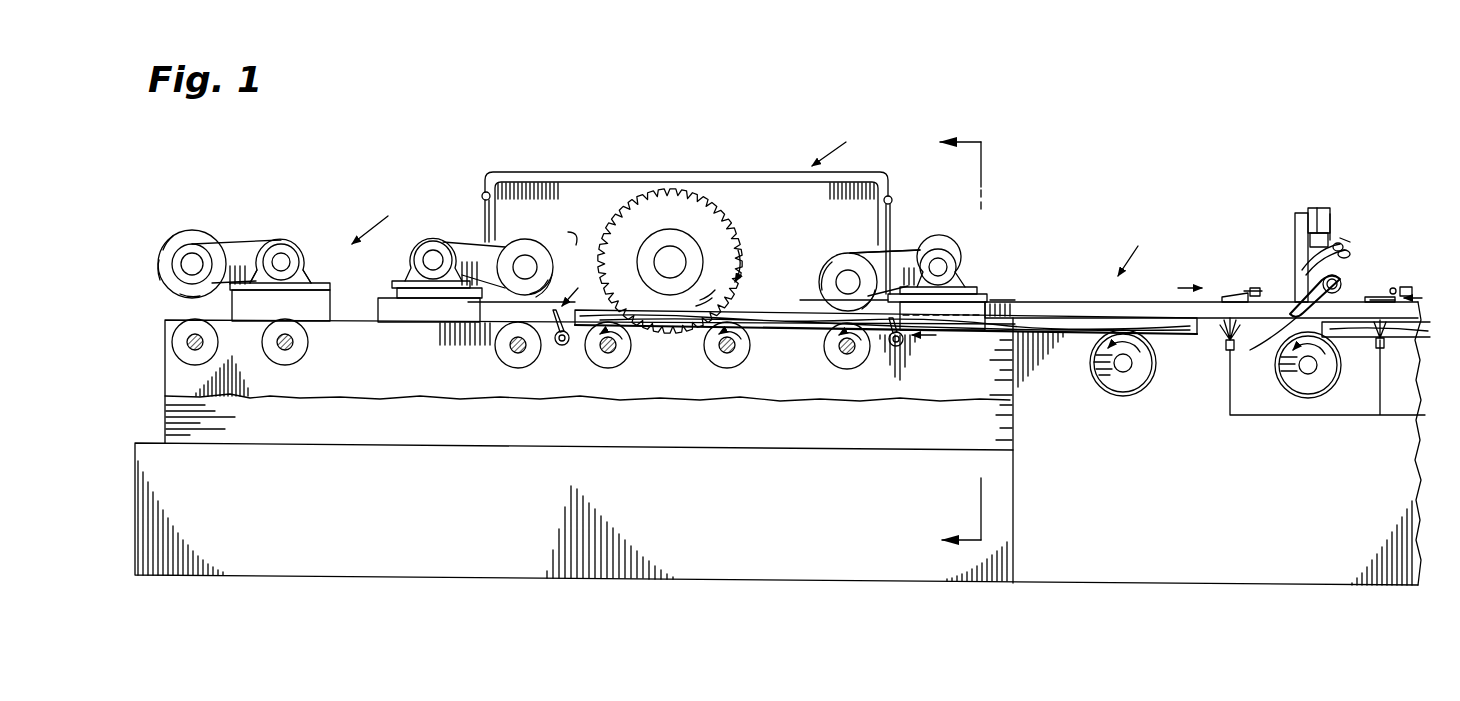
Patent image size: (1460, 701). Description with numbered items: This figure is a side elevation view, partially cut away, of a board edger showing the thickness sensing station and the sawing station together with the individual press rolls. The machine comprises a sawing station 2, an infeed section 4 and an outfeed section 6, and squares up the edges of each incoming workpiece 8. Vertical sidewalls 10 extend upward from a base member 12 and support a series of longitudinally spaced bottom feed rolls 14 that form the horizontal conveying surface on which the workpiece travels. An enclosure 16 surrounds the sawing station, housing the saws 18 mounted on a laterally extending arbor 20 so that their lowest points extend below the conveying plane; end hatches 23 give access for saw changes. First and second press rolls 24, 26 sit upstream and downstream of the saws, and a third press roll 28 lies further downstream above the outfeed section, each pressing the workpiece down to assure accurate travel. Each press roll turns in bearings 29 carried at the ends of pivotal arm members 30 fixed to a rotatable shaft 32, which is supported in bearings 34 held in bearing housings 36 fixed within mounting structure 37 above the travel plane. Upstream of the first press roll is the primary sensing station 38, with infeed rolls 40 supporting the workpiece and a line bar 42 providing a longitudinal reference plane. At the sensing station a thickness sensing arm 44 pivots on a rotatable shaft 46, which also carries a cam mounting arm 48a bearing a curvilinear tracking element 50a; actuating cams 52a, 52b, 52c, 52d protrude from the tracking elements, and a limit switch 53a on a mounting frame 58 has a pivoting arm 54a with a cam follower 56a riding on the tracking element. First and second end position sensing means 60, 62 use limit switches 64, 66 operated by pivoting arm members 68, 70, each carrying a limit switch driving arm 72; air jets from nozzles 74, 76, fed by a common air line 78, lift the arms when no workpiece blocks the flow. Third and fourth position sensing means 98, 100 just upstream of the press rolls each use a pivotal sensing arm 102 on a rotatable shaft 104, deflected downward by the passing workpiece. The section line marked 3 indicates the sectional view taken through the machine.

The sawing station 2 is at (833, 144).
The section line 3- 3 is at (949, 344).
The infeed section 4 is at (1134, 251).
The outfeed section 6 is at (376, 220).
The workpiece 8 is at (762, 310).
The vertical sidewalls 10 is at (1014, 432).
The base member 12 is at (1014, 505).
The bottom feed rolls 14 is at (297, 346).
The enclosure 16 is at (890, 180).
The saws 18 is at (738, 232).
The arbor 20 is at (670, 246).
The end hatches 23 is at (484, 198).
The first press roll 24 is at (822, 255).
The second press roll 26 is at (581, 229).
The third press roll 28 is at (170, 252).
The bearings 29 is at (180, 280).
The pivotal arm members 30 is at (232, 248).
The rotatable shaft 32 is at (292, 258).
The bearings 34 is at (302, 270).
The bearing housings 36 is at (290, 240).
The mounting structure 37 is at (320, 288).
The primary sensing station 38 is at (1317, 250).
The infeed rolls 40 is at (1145, 388).
The line bar 42 is at (1075, 302).
The thickness sensing arm 44 is at (1269, 342).
The rotatable shaft 46 is at (1344, 285).
The cam mounting arm 48a is at (1318, 282).
The curvilinear tracking element 50a is at (1350, 253).
The actuating cam 52a is at (1352, 242).
The actuating cam 52b is at (1322, 208).
The actuating cam 52c is at (1302, 268).
The actuating cam 52d is at (1298, 262).
The limit switch 53a is at (1334, 214).
The pivoting arm 54a is at (1340, 238).
The cam follower 56a is at (1342, 246).
The mounting frame 58 is at (1300, 213).
The first end position sensing means 60 is at (1422, 296).
The second end position sensing means 62 is at (1176, 287).
The limit switch 64 is at (1408, 286).
The limit switch 66 is at (1254, 288).
The pivoting arm member 68 is at (1372, 295).
The pivoting arm member 70 is at (1228, 295).
The limit switch driving arm 72 is at (1240, 290).
The nozzle 74 is at (1376, 350).
The nozzle 76 is at (1226, 352).
The common air line 78 is at (1310, 416).
The third position sensing means 98 is at (940, 338).
The fourth position sensing means 100 is at (576, 286).
The pivotal sensing arm 102 is at (552, 345).
The rotatable shaft 104 is at (566, 346).